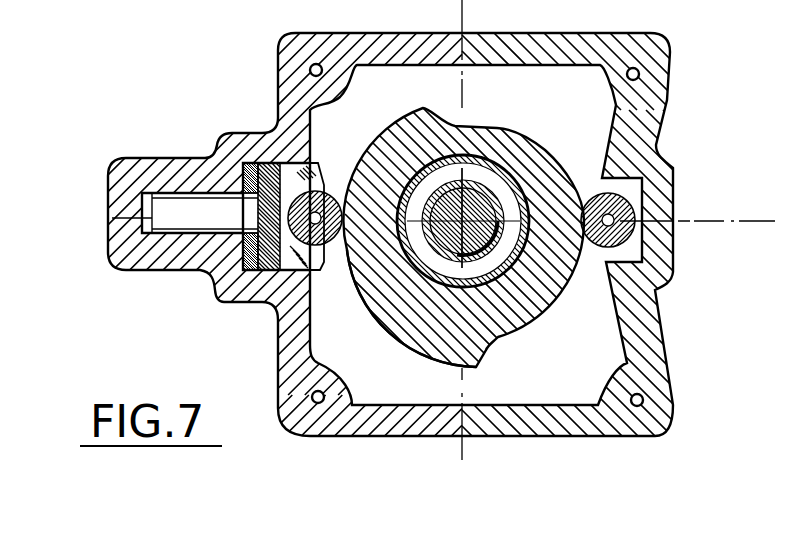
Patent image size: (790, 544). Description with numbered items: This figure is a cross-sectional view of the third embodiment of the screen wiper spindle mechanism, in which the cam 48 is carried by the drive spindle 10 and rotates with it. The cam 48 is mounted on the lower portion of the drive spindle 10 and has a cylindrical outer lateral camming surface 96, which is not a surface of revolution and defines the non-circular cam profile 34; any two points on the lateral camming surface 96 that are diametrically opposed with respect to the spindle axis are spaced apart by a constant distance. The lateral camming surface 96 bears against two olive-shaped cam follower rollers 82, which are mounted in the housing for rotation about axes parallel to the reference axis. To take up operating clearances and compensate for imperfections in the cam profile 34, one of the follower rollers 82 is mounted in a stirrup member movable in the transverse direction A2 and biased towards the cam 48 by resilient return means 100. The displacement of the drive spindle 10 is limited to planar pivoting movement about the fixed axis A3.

The drive spindle 10 is at (476, 200).
The cam profile 34 is at (538, 317).
The cam 48 is at (538, 168).
The cam follower rollers 82 is at (625, 200).
The lateral camming surface 96 is at (357, 292).
The resilient return means 100 is at (236, 270).
The transverse direction A2 is at (102, 218).
The fixed axis A3 is at (461, 22).